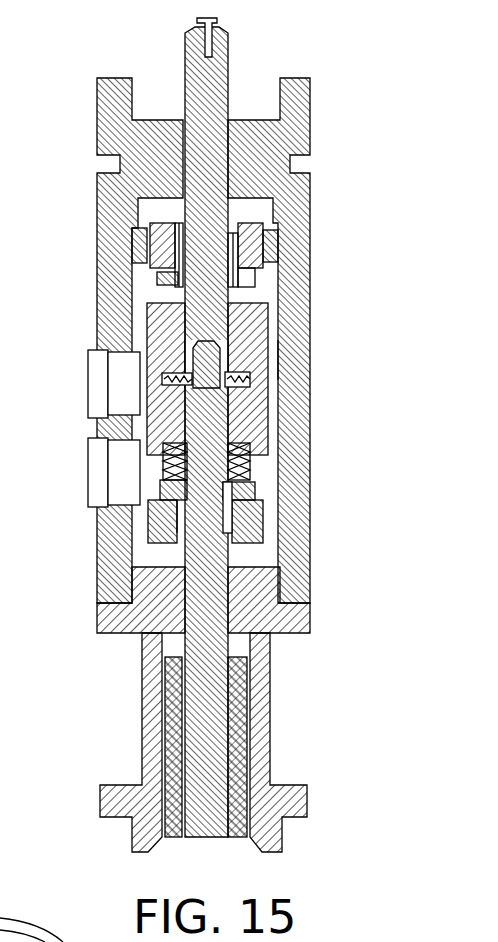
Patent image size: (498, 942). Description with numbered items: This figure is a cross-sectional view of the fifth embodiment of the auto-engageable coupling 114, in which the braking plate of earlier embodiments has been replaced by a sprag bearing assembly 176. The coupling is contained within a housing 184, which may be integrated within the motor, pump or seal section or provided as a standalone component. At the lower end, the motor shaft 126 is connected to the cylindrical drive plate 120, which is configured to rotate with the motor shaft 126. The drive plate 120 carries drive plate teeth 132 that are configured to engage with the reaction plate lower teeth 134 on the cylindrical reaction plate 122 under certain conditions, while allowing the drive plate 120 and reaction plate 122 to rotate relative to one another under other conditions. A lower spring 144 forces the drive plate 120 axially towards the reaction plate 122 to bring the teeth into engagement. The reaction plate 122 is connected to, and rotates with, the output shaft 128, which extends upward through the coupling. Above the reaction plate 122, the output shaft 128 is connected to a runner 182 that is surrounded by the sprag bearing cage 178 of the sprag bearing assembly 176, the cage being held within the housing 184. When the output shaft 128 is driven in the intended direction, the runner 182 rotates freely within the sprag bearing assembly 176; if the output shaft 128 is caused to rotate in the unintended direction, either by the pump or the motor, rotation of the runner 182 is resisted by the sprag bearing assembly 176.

The auto-engageable coupling 114 is at (388, 150).
The sprag bearing assembly 176 is at (70, 237).
The runner 182 is at (250, 225).
The sprag bearing cage 178 is at (277, 243).
The output shaft 128 is at (213, 427).
The reaction plate 122 is at (265, 310).
The reaction plate lower teeth 134 is at (247, 362).
The housing 184 is at (293, 360).
The drive plate teeth 132 is at (237, 388).
The drive plate 120 is at (252, 437).
The lower spring 144 is at (248, 470).
The motor shaft 126 is at (223, 595).